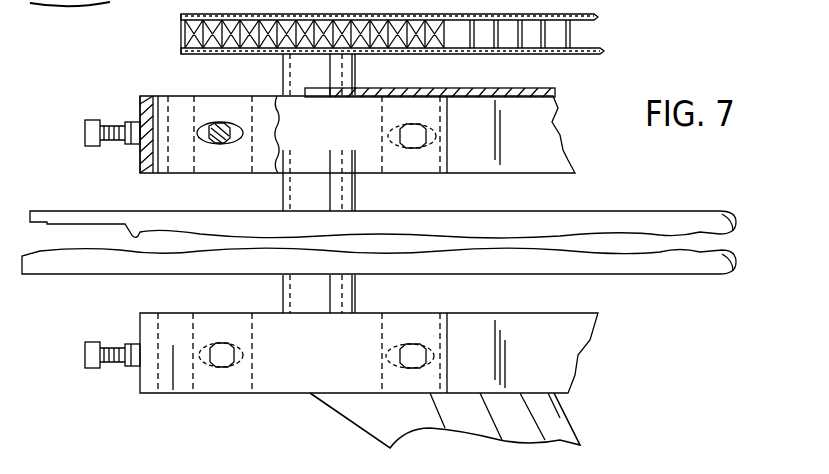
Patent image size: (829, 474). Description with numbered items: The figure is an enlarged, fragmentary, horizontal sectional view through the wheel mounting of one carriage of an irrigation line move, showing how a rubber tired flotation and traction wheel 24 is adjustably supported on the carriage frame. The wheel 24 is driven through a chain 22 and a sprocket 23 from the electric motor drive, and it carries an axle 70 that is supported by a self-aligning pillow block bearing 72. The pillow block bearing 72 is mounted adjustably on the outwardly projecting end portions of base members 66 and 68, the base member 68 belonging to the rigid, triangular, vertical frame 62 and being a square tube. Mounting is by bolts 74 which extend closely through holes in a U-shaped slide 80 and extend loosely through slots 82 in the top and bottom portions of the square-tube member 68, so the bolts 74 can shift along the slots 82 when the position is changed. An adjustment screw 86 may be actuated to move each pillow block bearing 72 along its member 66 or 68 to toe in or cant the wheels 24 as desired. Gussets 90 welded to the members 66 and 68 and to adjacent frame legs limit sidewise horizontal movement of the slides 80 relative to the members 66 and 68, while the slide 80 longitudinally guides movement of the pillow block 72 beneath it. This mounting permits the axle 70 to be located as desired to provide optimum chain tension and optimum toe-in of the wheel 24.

The chain 22 is at (488, 20).
The sprocket 23 is at (410, 30).
The flotation and traction wheel 24 is at (610, 222).
The vertical frame 62 is at (568, 430).
The base member 66 is at (357, 130).
The base member 68 is at (365, 357).
The axle 70 is at (300, 300).
The pillow block bearing 72 is at (390, 120).
The bolt 74 is at (226, 126).
The slide 80 is at (145, 100).
The slot 82 is at (205, 122).
The adjustment screw 86 is at (87, 128).
The gusset 90 is at (375, 92).